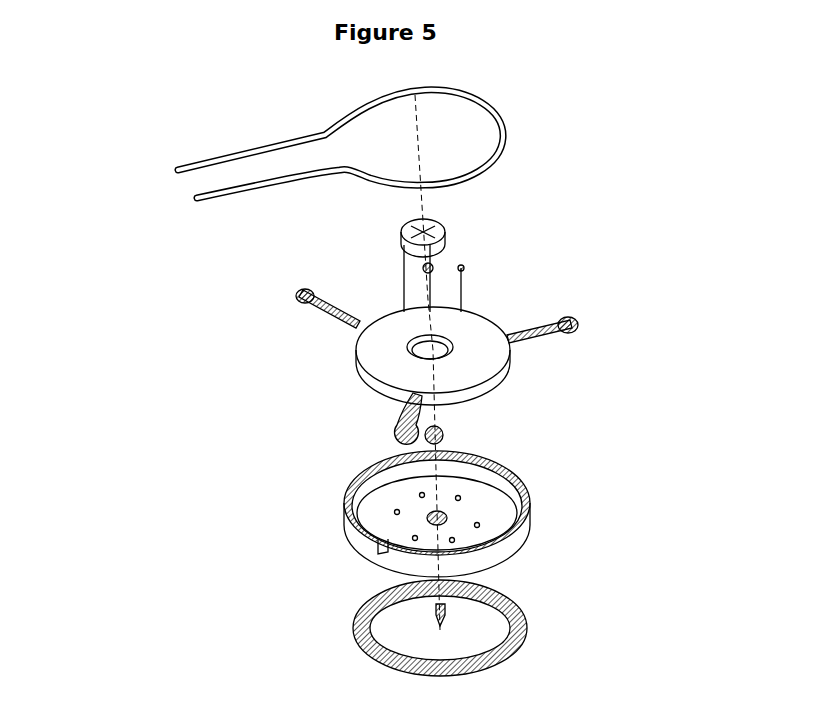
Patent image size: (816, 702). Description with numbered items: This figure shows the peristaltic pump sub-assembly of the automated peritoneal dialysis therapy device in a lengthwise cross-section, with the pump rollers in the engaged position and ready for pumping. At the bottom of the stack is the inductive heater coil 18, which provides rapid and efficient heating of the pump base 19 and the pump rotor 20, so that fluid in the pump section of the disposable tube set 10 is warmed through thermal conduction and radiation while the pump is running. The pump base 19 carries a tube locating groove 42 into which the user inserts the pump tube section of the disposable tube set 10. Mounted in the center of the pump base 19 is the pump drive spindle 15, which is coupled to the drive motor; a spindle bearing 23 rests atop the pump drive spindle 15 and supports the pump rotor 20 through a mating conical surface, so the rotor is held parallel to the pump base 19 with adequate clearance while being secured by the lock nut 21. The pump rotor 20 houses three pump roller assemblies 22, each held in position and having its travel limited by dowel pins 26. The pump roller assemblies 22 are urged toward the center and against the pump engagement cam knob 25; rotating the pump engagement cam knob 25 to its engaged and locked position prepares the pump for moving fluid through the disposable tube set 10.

The disposable tube set 10 is at (273, 152).
The pump drive spindle 15 is at (440, 628).
The inductive heater coil 18 is at (522, 628).
The pump base 19 is at (508, 497).
The pump rotor 20 is at (372, 388).
The lock nut 21 is at (432, 268).
The pump roller assemblies 22 is at (322, 306).
The spindle bearing 23 is at (443, 435).
The pump engagement cam knob 25 is at (438, 241).
The dowel pins 26 is at (463, 279).
The tube locating groove 42 is at (490, 473).